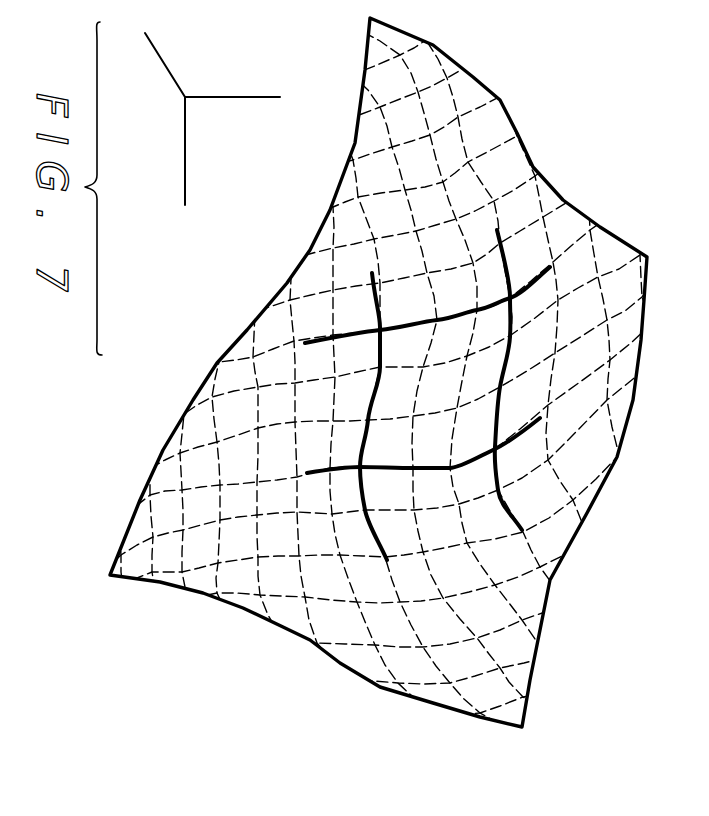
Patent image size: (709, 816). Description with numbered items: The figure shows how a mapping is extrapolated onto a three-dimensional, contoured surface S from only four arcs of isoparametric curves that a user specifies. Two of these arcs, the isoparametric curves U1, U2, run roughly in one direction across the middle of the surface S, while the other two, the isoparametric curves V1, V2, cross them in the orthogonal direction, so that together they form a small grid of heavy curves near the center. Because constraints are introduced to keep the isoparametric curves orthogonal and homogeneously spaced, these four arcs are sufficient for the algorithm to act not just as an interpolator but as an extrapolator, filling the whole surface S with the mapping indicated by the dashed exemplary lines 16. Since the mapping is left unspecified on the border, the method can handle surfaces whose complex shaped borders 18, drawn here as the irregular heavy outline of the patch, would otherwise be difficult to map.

The dashed exemplary lines 16 is at (656, 414).
The complex shaped borders 18 is at (395, 750).
The surface S is at (197, 658).
The isoparametric curve u1 U1 is at (416, 324).
The isoparametric curve u2 U2 is at (409, 463).
The isoparametric curve v1 V1 is at (378, 398).
The isoparametric curve v2 V2 is at (500, 360).